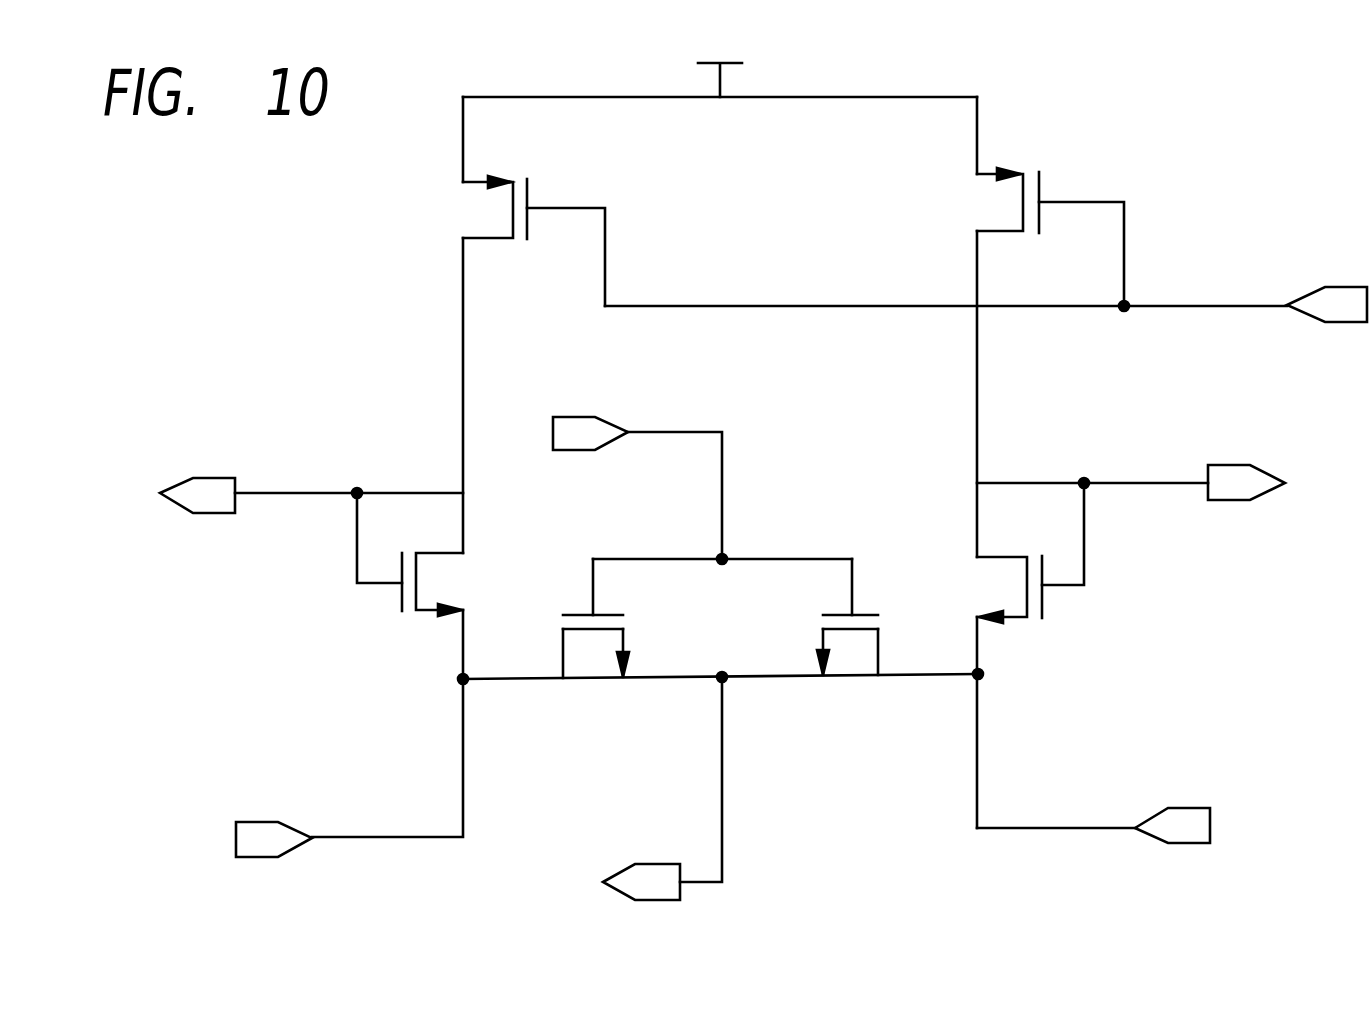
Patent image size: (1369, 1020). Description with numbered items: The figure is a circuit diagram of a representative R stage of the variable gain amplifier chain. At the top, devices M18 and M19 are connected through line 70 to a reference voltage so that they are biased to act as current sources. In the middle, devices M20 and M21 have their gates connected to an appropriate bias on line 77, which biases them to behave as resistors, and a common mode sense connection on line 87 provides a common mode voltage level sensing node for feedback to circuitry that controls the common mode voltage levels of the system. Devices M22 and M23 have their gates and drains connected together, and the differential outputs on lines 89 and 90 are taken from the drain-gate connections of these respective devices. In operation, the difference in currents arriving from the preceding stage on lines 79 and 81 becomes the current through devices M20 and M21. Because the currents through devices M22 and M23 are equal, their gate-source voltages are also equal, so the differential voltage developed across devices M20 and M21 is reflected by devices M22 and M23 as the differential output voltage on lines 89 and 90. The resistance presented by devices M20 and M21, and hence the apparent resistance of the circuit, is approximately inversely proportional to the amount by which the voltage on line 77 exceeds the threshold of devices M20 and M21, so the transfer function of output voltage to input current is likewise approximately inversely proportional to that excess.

The line 70 is at (1207, 305).
The line 77 is at (670, 431).
The line 79 is at (340, 837).
The line 81 is at (1073, 828).
The line 87 is at (723, 817).
The line 89 is at (317, 490).
The line 90 is at (1135, 483).
The device M18 is at (502, 364).
The device M19 is at (1019, 362).
The device M20 is at (642, 639).
The device M21 is at (800, 639).
The device M22 is at (410, 586).
The device M23 is at (1030, 655).